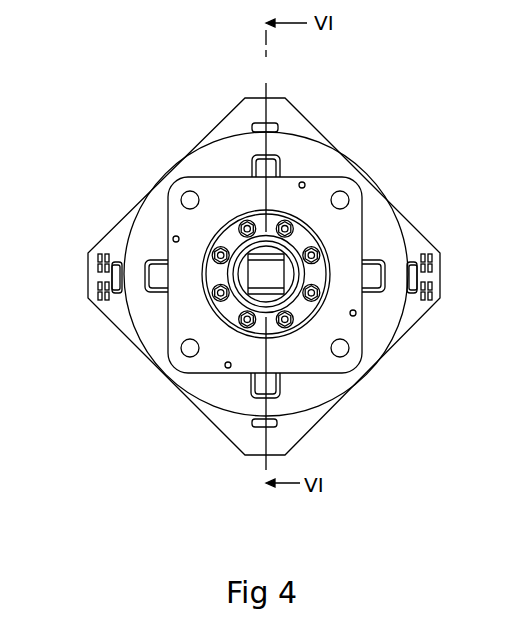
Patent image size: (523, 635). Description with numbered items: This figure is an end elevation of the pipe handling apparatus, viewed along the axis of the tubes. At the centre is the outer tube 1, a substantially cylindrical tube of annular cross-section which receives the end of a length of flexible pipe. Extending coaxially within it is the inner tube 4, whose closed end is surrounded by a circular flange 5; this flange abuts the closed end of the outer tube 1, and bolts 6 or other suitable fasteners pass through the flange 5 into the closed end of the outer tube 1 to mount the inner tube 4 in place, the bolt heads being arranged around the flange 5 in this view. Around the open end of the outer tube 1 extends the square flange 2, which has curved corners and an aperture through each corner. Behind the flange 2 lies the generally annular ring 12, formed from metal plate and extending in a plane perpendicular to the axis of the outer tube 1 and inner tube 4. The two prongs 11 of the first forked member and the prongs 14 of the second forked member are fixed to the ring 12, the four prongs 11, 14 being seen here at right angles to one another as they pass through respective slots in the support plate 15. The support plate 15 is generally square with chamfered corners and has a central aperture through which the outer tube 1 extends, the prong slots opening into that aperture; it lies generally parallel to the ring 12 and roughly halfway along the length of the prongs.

The outer tube 1 is at (264, 250).
The square flange 2 is at (310, 362).
The inner tube 4 is at (242, 300).
The circular flange 5 is at (300, 233).
The bolts 6 is at (284, 228).
The prongs 11 is at (255, 170).
The annular ring 12 is at (380, 330).
The prongs 14 is at (147, 267).
The support plate 15 is at (415, 308).